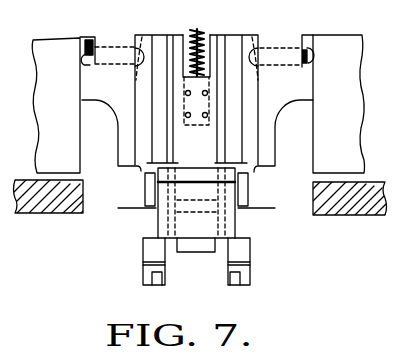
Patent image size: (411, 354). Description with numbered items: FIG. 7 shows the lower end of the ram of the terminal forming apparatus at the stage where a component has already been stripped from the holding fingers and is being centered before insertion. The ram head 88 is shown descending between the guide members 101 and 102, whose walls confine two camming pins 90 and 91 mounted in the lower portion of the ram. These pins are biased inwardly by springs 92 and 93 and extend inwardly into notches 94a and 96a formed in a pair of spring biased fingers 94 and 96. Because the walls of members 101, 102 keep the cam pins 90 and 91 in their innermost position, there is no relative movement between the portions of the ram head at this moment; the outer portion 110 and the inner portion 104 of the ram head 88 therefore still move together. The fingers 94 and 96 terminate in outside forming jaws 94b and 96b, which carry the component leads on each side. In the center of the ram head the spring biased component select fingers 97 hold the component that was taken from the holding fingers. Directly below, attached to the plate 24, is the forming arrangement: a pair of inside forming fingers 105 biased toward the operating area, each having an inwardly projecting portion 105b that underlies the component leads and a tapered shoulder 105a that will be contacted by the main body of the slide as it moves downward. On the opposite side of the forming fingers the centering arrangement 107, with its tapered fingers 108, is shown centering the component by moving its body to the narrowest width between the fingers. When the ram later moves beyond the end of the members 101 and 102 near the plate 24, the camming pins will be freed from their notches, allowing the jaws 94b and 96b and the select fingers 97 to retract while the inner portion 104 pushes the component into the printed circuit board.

The plate 24 is at (33, 212).
The ram head 88 is at (79, 93).
The camming pin 90 is at (84, 64).
The camming pin 91 is at (311, 66).
The spring 92 is at (90, 42).
The spring 93 is at (308, 43).
The spring biased finger 94 is at (142, 94).
The notch 94a is at (138, 37).
The outside forming jaw 94b is at (143, 186).
The spring biased finger 96 is at (253, 99).
The notch 96a is at (257, 35).
The outside forming jaw 96b is at (250, 187).
The component select fingers 97 is at (197, 252).
The member 101 is at (363, 129).
The member 102 is at (36, 142).
The inner portion of the ram head 104 is at (236, 33).
The inside forming finger 105 is at (141, 247).
The tapered shoulder 105a is at (142, 262).
The inwardly projecting portion 105b is at (160, 285).
The centering arrangement 107 is at (236, 193).
The tapered fingers 108 is at (160, 223).
The outer portion of the ram head 110 is at (111, 118).